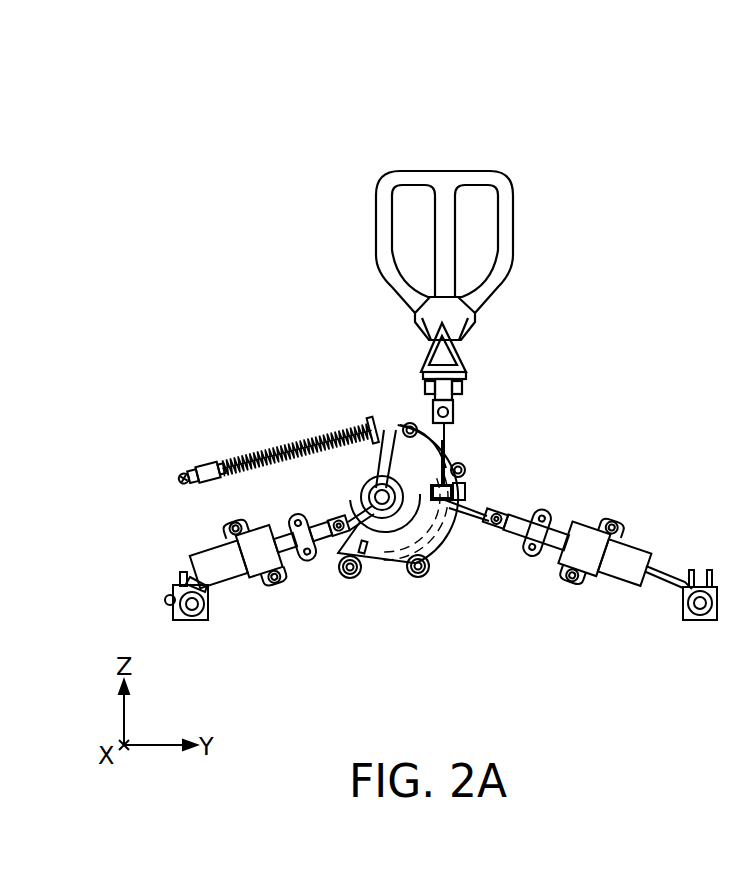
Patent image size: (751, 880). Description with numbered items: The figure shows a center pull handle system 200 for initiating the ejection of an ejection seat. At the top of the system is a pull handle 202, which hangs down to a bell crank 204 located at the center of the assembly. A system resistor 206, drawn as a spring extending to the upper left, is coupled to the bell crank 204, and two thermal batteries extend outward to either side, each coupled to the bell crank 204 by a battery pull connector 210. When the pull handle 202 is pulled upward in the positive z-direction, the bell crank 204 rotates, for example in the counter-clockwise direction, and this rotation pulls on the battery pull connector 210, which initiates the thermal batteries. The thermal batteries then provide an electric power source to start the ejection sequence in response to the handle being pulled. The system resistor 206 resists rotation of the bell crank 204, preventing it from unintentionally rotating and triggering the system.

The center pull handle system 200 is at (340, 152).
The pull handle 202 is at (513, 222).
The bell crank 204 is at (438, 540).
The system resistor 206 is at (272, 450).
The battery pull connectors 210 is at (480, 512).